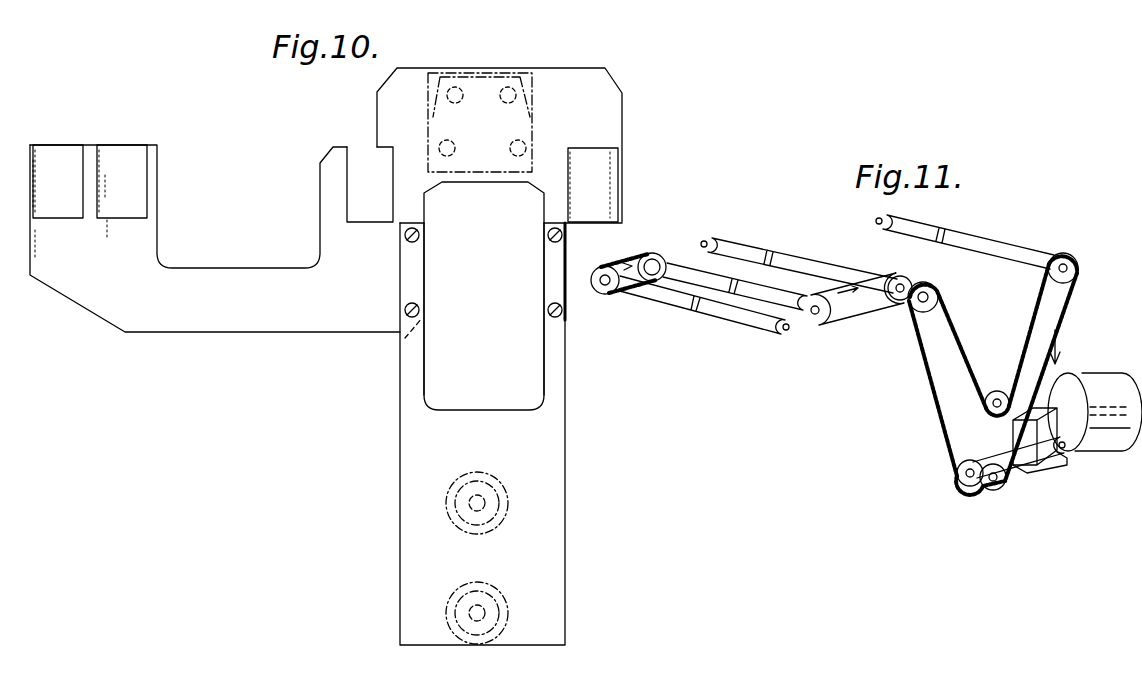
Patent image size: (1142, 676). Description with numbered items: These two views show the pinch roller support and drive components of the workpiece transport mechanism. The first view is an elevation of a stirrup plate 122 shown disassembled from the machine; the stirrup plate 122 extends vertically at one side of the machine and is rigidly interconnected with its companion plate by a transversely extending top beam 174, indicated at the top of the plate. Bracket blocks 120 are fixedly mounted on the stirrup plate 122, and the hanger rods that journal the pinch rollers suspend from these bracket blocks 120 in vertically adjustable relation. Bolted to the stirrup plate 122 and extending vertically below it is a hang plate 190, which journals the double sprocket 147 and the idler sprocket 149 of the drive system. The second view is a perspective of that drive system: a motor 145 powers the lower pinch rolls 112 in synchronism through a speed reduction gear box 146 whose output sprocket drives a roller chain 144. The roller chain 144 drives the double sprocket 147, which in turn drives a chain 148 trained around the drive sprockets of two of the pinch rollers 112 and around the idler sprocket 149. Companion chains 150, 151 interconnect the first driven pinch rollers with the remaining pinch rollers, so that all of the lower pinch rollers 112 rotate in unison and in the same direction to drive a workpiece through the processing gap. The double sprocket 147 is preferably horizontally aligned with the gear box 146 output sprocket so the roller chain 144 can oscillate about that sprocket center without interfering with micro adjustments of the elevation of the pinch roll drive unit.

In FIG. 11, the lower pinch roll 112 is at (745, 290).
In FIG. 10, the bracket block 120 is at (118, 150).
In FIG. 10, the stirrup plate 122 is at (243, 332).
In FIG. 11, the roller chain 144 is at (998, 448).
In FIG. 11, the motor 145 is at (1095, 425).
In FIG. 11, the speed reduction gear box 146 is at (1043, 412).
In FIG. 10, the double sprocket 147 is at (448, 613).
In FIG. 11, the double sprocket 147 is at (997, 483).
In FIG. 11, the chain 148 is at (938, 380).
In FIG. 10, the idler sprocket 149 is at (455, 503).
In FIG. 11, the idler sprocket 149 is at (998, 391).
In FIG. 11, the companion chain 150 is at (853, 311).
In FIG. 11, the companion chain 151 is at (632, 262).
In FIG. 10, the top beam 174 is at (507, 78).
In FIG. 10, the hang plate 190 is at (555, 438).